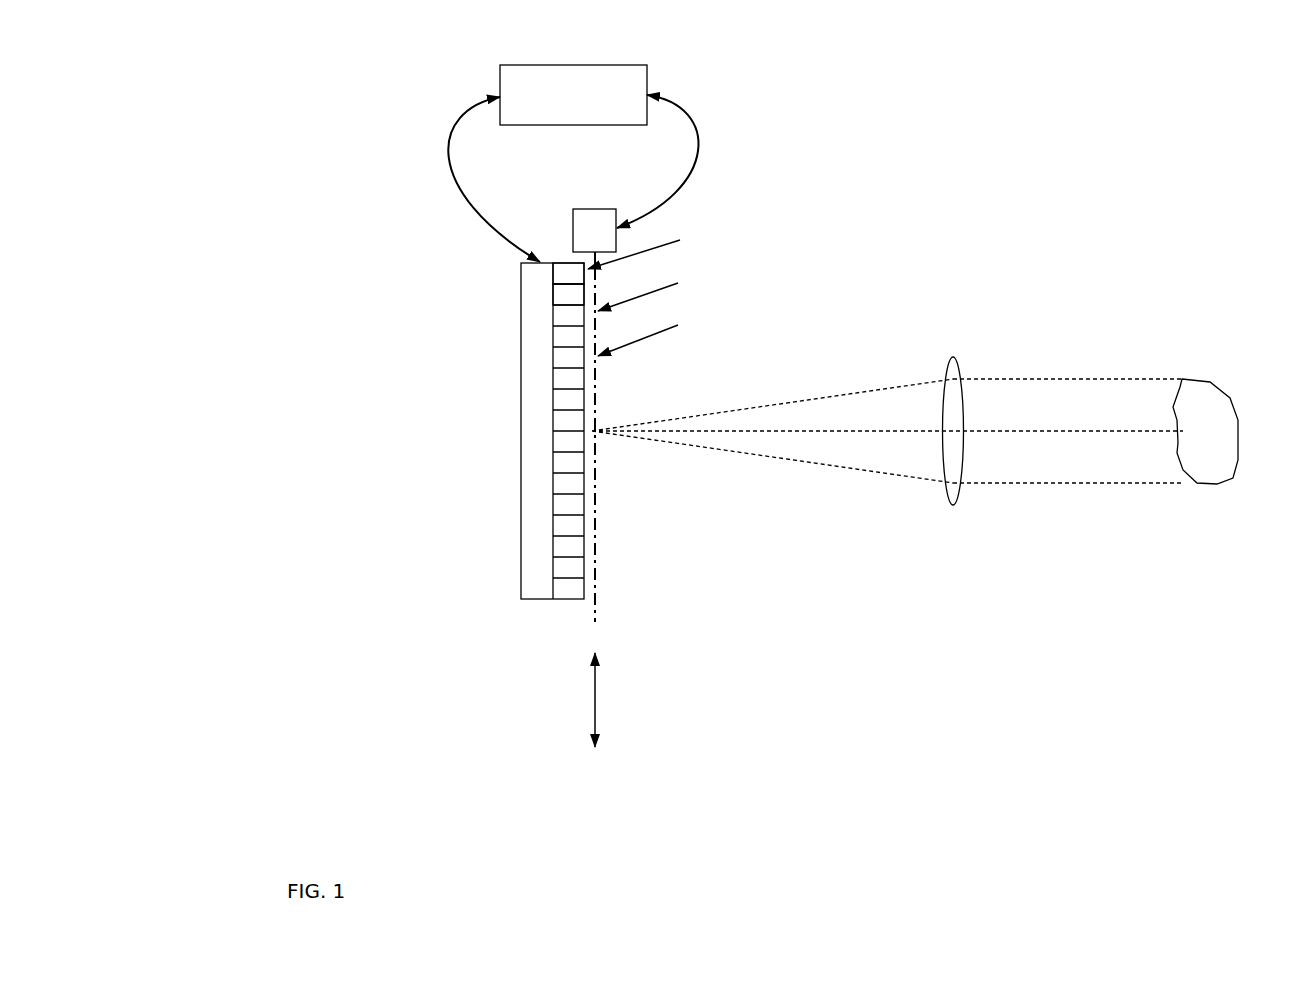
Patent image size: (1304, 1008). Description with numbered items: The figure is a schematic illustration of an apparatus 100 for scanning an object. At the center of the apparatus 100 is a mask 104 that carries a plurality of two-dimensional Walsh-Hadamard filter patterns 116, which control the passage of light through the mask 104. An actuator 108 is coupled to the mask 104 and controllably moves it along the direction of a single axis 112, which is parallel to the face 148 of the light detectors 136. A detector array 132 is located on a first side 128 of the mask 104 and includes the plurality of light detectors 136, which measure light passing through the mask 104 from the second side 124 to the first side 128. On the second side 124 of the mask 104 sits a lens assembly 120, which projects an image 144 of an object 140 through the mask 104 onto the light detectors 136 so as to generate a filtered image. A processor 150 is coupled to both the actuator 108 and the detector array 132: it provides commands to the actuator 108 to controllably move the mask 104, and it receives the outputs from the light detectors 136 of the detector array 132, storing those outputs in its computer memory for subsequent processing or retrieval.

The apparatus 100 is at (418, 653).
The mask 104 is at (597, 387).
The actuator 108 is at (597, 209).
The axis 112 is at (595, 695).
The filter patterns 116 is at (659, 310).
The lens assembly 120 is at (953, 504).
The second side 124 is at (670, 525).
The first side 128 is at (448, 525).
The detector array 132 is at (553, 263).
The light detectors 136 is at (563, 293).
The object 140 is at (1232, 398).
The image 144 is at (1048, 378).
The face 148 is at (652, 243).
The processor 150 is at (574, 65).